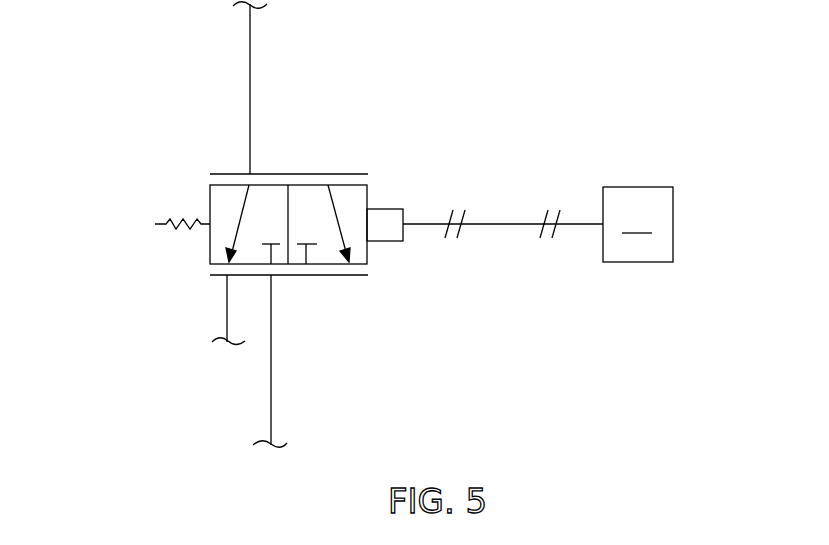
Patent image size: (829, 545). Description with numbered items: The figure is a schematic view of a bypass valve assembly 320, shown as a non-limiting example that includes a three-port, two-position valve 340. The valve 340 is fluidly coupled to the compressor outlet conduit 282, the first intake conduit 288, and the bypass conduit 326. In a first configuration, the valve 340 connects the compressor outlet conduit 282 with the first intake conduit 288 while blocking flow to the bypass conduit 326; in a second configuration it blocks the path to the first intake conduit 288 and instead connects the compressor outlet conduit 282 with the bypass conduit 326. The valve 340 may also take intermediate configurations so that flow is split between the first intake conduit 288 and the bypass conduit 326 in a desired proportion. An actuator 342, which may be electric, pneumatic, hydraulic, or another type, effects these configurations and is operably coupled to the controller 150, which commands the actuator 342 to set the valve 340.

The controller 150 is at (638, 224).
The compressor outlet conduit 282 is at (250, 33).
The first intake conduit 288 is at (227, 313).
The bypass valve assembly 320 is at (556, 66).
The bypass conduit 326 is at (271, 388).
The valve 340 is at (365, 147).
The actuator 342 is at (385, 243).